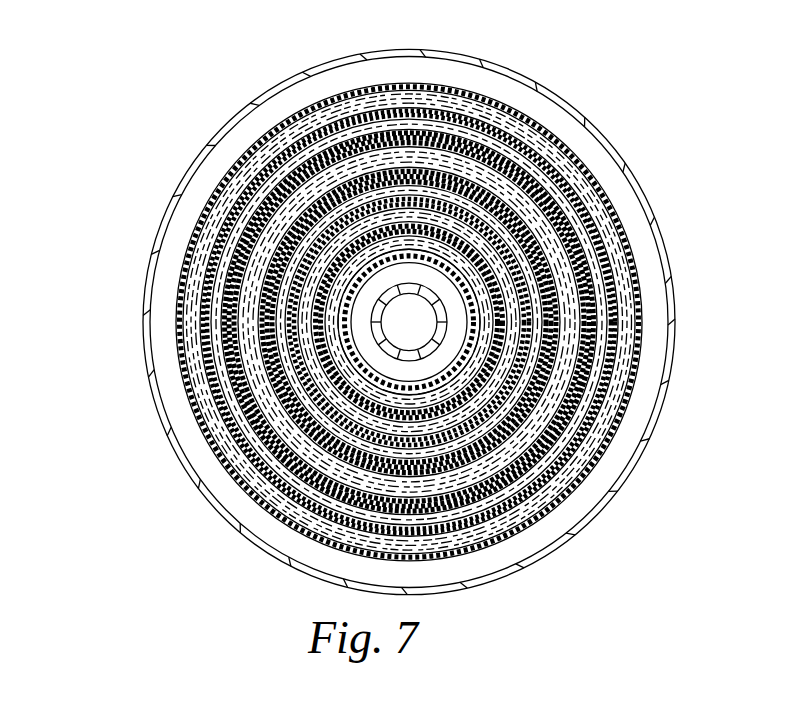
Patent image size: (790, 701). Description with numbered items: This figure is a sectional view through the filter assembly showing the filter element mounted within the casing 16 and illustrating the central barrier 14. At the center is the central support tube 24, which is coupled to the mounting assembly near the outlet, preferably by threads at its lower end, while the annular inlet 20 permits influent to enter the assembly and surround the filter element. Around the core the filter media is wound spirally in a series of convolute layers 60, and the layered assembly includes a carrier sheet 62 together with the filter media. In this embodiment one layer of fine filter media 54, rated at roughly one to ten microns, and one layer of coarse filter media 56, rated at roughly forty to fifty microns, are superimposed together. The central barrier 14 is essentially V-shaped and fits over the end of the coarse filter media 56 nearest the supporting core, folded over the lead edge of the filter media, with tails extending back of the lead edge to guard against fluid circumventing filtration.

The central barrier 14 is at (440, 236).
The casing 16 is at (665, 353).
The annular inlet 20 is at (409, 322).
The central support tube 24 is at (409, 322).
The fine filter media 54 is at (246, 465).
The coarse filter media 56 is at (207, 417).
The convolute layers 60 is at (627, 249).
The carrier sheet 62 is at (608, 433).